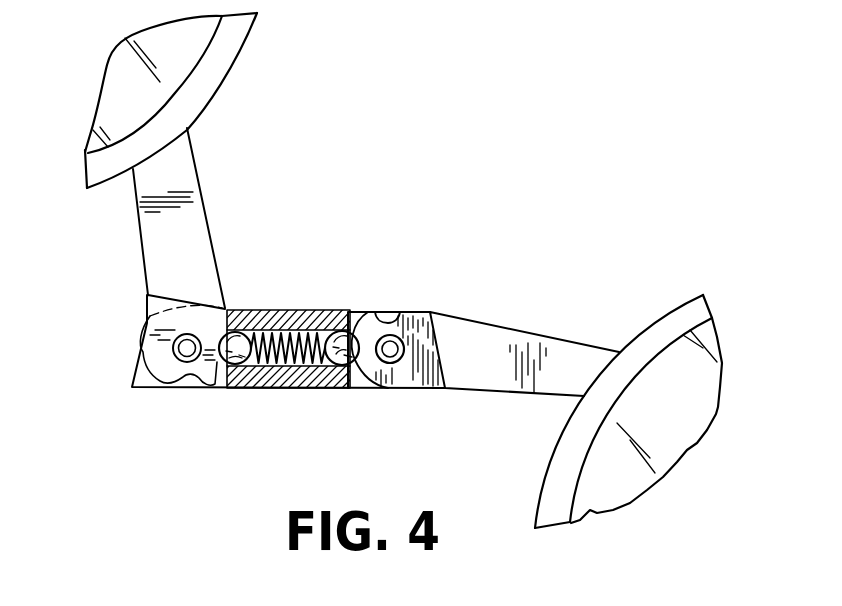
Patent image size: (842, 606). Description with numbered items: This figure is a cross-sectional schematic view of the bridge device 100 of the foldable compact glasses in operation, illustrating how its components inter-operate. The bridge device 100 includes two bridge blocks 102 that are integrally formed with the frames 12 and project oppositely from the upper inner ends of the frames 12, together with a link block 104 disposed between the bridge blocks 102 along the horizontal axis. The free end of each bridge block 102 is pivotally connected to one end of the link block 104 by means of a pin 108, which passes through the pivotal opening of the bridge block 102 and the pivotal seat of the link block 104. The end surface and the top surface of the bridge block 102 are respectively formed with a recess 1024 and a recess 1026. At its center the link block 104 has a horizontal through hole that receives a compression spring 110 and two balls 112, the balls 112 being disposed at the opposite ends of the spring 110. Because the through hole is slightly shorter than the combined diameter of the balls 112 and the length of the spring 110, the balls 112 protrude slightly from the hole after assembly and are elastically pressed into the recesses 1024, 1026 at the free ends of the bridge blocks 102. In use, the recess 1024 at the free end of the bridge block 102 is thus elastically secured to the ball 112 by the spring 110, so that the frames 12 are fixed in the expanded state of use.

The frames 12 is at (217, 92).
The bridge device 100 is at (366, 291).
The bridge block 102 is at (495, 340).
The link block 104 is at (277, 312).
The pin 108 is at (407, 365).
The compression spring 110 is at (275, 358).
The balls 112 is at (216, 362).
The recess 1024 is at (185, 380).
The recess 1026 is at (387, 318).